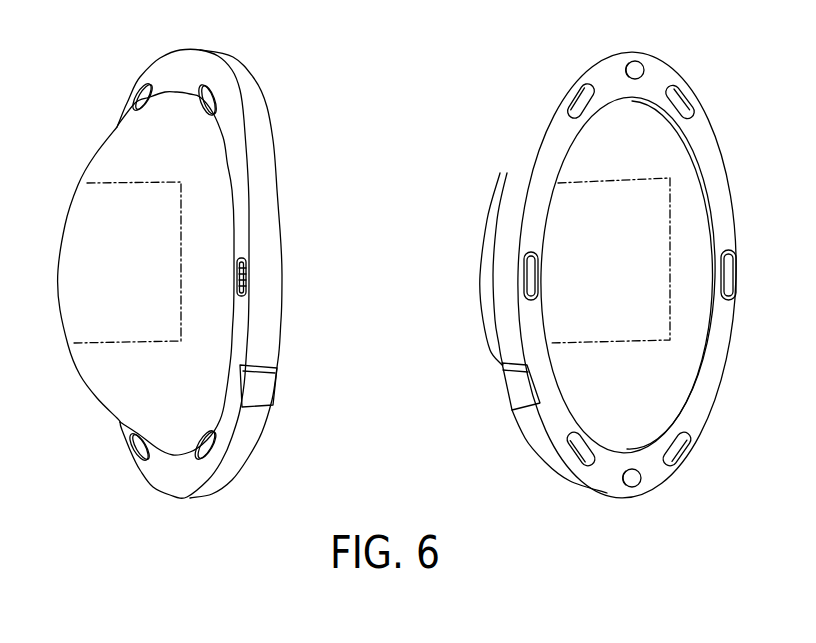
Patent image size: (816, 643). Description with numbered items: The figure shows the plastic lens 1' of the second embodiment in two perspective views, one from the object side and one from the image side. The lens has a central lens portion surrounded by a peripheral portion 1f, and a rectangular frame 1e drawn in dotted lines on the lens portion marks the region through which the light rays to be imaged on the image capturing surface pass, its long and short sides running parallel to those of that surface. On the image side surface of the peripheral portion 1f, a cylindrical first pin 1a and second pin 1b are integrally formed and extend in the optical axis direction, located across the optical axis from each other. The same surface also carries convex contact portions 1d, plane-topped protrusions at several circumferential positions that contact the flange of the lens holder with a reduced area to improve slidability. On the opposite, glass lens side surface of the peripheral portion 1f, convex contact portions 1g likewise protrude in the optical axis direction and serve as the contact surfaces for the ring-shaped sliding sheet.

The plastic lens 1' is at (389, 240).
The first pin 1a is at (623, 478).
The second pin 1b is at (635, 70).
The convex contact portions 1d is at (533, 273).
The rectangular frame 1e is at (670, 242).
The peripheral portion 1f is at (528, 138).
The convex contact portions 1g is at (247, 268).